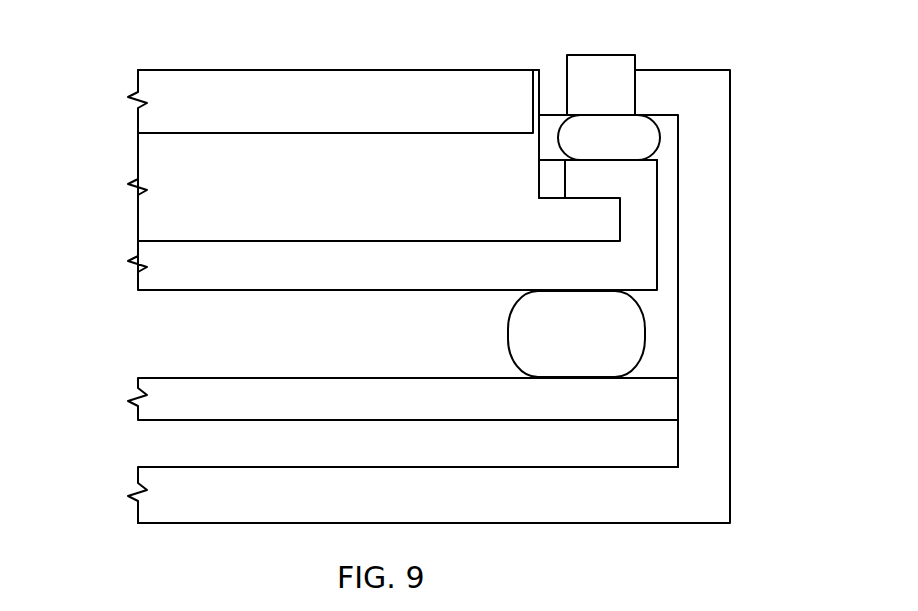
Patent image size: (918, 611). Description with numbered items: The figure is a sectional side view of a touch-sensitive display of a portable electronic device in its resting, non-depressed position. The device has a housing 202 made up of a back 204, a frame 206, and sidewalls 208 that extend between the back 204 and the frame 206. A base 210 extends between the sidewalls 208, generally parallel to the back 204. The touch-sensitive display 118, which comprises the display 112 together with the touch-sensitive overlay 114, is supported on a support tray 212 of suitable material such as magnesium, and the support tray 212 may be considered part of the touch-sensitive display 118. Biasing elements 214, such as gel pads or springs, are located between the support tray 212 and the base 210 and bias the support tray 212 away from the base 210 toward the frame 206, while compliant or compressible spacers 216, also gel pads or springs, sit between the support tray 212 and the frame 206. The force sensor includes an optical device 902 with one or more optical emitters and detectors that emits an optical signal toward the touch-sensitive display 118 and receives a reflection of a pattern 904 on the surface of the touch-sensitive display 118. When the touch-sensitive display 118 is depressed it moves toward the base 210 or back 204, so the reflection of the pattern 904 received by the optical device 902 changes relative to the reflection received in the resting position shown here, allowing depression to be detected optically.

The touch-sensitive overlay 114 is at (137, 82).
The touch-sensitive display 118 is at (153, 70).
The pattern 904 is at (535, 69).
The display 112 is at (137, 157).
The support tray 212 is at (137, 247).
The optical device 902 is at (598, 55).
The compliant or compressible spacers 216 is at (660, 139).
The frame 206 is at (733, 110).
The biasing elements 214 is at (645, 335).
The base 210 is at (137, 384).
The back 204 is at (137, 475).
The housing 202 is at (578, 523).
The sidewalls 208 is at (705, 500).